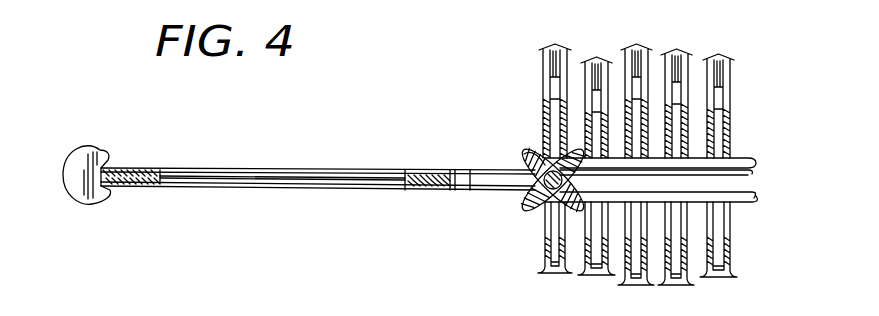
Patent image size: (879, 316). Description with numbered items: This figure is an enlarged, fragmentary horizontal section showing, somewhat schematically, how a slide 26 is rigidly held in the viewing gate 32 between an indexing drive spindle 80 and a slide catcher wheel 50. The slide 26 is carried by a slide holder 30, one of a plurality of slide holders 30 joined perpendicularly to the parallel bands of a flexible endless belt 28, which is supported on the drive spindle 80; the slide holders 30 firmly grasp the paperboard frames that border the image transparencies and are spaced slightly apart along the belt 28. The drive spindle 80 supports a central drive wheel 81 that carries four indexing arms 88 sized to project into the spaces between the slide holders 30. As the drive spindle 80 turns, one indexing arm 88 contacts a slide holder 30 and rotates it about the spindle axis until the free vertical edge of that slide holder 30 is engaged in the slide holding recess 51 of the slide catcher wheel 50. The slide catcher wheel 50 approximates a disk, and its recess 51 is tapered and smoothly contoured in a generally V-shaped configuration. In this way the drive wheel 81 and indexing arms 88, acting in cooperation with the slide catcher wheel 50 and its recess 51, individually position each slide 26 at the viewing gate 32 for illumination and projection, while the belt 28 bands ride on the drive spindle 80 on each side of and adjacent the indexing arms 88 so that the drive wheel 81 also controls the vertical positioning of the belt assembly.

The slide 26 is at (732, 93).
The endless belt 28 is at (742, 160).
The slide holder 30 is at (734, 134).
The viewing gate 32 is at (292, 162).
The slide catcher wheel 50 is at (77, 182).
The slide holding recess 51 is at (110, 162).
The drive spindle 80 is at (545, 162).
The drive wheel 81 is at (523, 158).
The indexing arm 88 is at (541, 208).